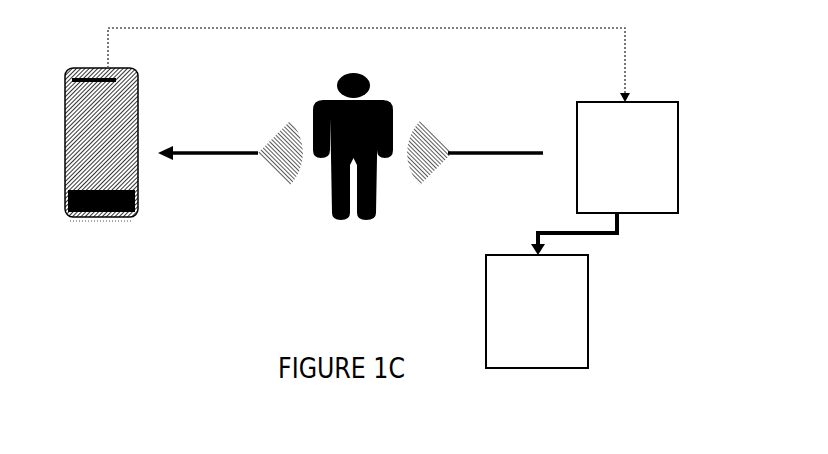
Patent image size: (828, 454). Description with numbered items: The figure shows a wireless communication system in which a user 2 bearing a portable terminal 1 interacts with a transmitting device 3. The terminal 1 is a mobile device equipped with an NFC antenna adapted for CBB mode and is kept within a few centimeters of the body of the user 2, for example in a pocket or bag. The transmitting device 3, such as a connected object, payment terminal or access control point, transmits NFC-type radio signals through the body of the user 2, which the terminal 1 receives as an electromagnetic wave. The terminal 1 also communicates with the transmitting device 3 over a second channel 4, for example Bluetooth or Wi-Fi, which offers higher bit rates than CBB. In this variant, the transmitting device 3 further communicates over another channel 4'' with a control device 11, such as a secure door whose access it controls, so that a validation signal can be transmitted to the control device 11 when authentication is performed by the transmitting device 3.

The terminal 1 is at (162, 113).
The user 2 is at (381, 84).
The transmitting device 3 is at (680, 140).
The second channel 4 is at (399, 59).
The another channel 4'' is at (593, 234).
The control device 11 is at (588, 307).